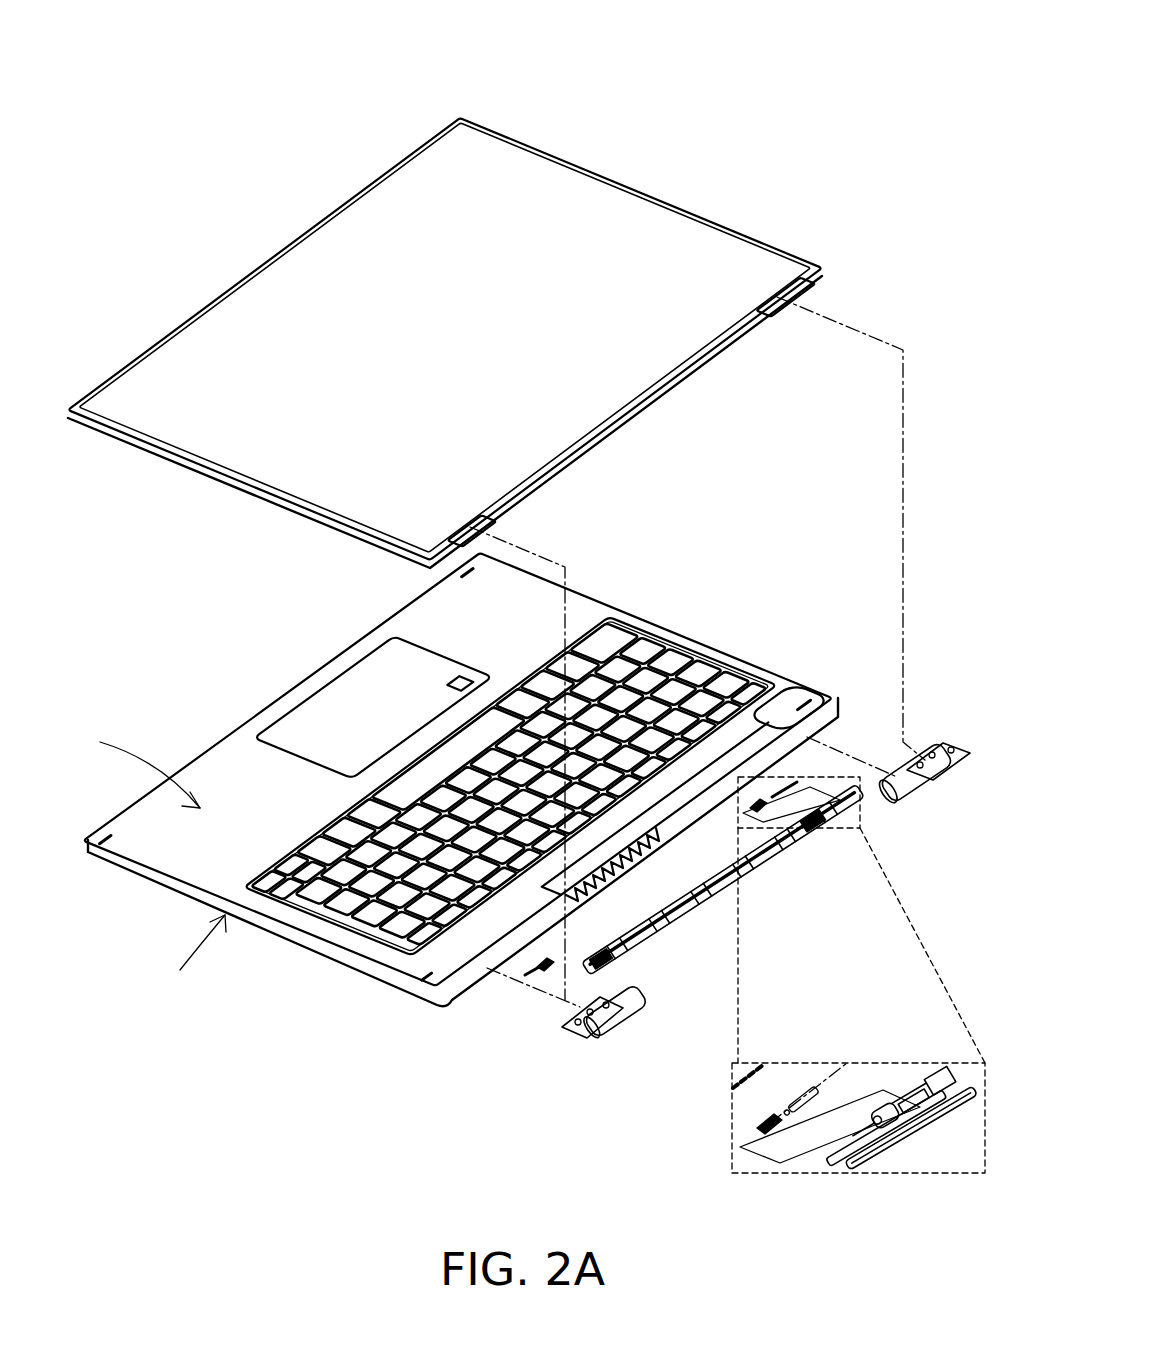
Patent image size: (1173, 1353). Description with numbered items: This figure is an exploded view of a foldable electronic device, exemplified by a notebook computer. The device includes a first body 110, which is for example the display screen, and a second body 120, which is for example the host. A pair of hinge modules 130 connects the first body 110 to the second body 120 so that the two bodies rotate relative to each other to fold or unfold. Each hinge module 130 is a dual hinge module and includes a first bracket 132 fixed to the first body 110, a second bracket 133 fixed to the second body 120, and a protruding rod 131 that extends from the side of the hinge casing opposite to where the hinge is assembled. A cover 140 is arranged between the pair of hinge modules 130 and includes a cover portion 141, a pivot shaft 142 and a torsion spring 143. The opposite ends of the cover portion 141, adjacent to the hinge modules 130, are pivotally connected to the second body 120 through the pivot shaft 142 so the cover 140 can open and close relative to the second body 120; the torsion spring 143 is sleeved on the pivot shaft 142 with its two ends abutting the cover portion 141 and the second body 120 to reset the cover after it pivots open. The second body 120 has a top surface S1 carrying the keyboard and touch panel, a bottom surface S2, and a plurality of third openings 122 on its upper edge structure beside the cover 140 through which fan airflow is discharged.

The first body 110 is at (300, 505).
The second body 120 is at (712, 645).
The third openings 122 is at (605, 875).
The hinge module 130 is at (773, 901).
The protruding rod 131 is at (655, 1013).
The first bracket 132 is at (610, 993).
The second bracket 133 is at (593, 1037).
The cover 140 is at (888, 20).
The cover portion 141 is at (767, 867).
The pivot shaft 142 is at (790, 790).
The torsion spring 143 is at (757, 803).
The top surface S1 is at (132, 766).
The bottom surface S2 is at (182, 951).